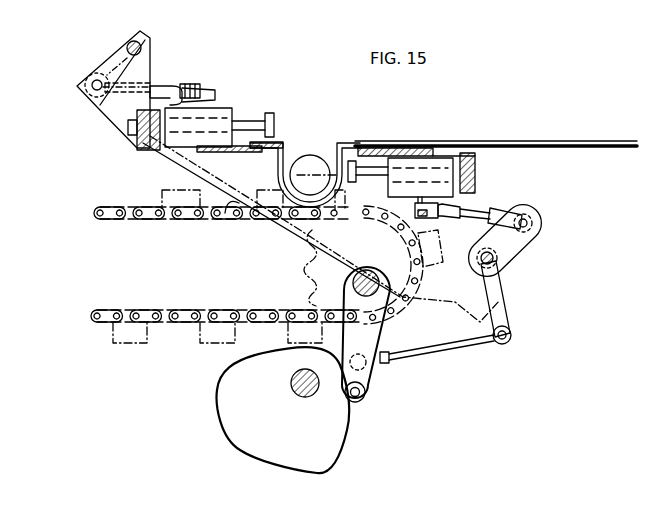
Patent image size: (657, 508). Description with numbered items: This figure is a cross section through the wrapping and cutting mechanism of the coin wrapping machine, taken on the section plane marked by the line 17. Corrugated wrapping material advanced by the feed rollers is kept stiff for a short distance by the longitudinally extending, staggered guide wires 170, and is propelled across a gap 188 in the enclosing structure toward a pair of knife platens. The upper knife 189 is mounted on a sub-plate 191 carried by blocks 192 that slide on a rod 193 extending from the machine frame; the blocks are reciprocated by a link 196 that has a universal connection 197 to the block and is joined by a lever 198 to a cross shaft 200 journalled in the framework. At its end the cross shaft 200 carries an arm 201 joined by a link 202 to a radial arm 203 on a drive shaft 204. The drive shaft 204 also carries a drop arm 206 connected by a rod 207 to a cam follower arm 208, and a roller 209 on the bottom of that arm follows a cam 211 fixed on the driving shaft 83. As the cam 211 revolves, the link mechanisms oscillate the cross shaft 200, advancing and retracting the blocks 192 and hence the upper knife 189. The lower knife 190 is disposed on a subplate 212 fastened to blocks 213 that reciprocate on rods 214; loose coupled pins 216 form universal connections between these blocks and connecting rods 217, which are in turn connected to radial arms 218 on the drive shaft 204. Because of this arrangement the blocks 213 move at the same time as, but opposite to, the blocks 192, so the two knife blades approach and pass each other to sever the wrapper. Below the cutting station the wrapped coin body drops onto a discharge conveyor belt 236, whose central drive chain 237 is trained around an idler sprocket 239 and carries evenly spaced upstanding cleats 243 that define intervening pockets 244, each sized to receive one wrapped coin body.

The guide wires 170 is at (572, 150).
The gap 188 is at (311, 149).
The knife platen 189 is at (275, 142).
The knife platen 190 is at (350, 142).
The sub-plate 191 is at (243, 157).
The blocks 192 is at (216, 108).
The rod 193 is at (250, 117).
The link 196 is at (157, 90).
The universal connections 197 is at (196, 89).
The lever 198 is at (100, 63).
The cross shaft 200 is at (143, 42).
The arm 201 is at (97, 107).
The link 202 is at (303, 240).
The radial arm 203 is at (465, 297).
The drive shaft 204 is at (507, 265).
The drop arm 206 is at (503, 313).
The rod 207 is at (447, 347).
The cam follower arm 208 is at (373, 380).
The roller 209 is at (373, 393).
The cam 211 is at (300, 455).
The subplate 212 is at (413, 152).
The blocks 213 is at (450, 143).
The rods 214 is at (477, 173).
The loose coupled pins 216 is at (433, 212).
The connecting rods 217 is at (483, 215).
The radial arms 218 is at (530, 245).
The discharge conveyor belt 236 is at (175, 335).
The central drive chain 237 is at (135, 318).
The idler sprocket 239 is at (303, 283).
The cleats 243 is at (162, 202).
The pockets 244 is at (237, 213).
The shaft 83 is at (296, 386).
The section line 17 is at (263, 187).